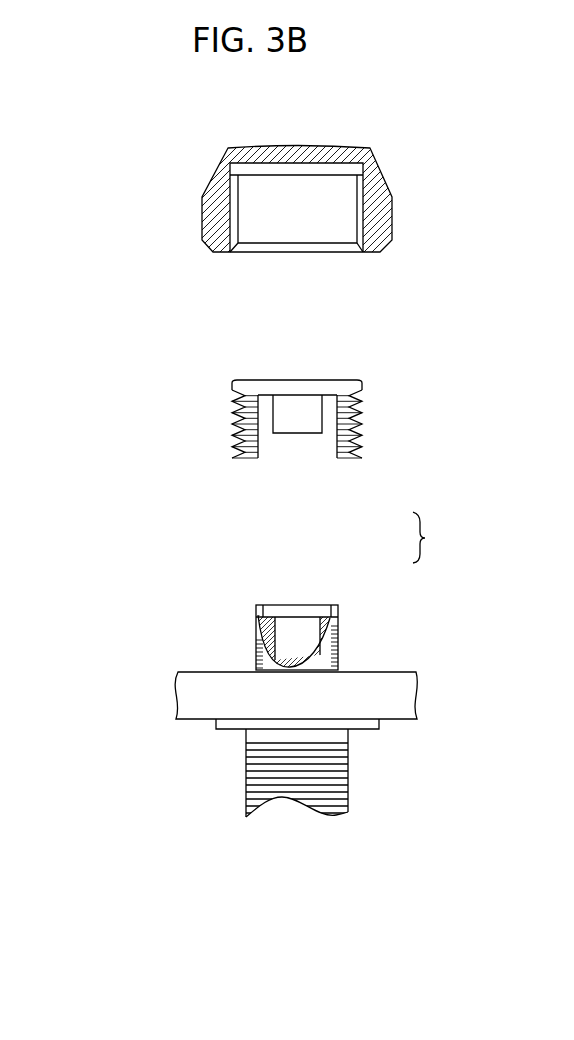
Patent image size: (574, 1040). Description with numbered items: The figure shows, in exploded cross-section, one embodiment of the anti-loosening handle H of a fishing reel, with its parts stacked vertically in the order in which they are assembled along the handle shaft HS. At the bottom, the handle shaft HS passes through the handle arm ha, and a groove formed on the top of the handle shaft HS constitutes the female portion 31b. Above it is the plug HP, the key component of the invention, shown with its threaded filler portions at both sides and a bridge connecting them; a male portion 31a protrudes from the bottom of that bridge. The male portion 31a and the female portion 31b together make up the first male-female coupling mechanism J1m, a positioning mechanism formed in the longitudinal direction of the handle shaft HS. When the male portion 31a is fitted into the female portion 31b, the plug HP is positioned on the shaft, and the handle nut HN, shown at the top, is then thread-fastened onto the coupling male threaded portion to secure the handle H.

The handle H is at (158, 137).
The handle nut HN is at (192, 218).
The plug HP is at (192, 423).
The handle shaft HS is at (202, 763).
The male portion 31a is at (297, 435).
The female portion 31b is at (299, 607).
The first male-female coupling mechanism J1m is at (442, 537).
The handle arm ha is at (375, 683).